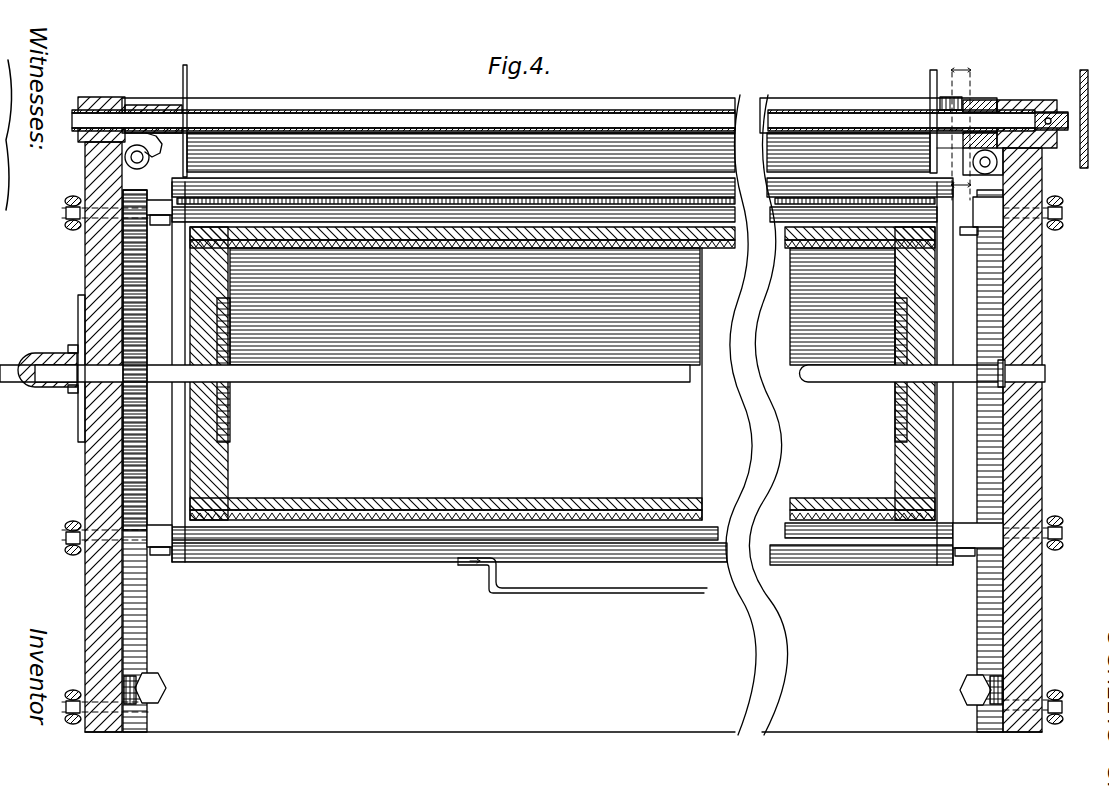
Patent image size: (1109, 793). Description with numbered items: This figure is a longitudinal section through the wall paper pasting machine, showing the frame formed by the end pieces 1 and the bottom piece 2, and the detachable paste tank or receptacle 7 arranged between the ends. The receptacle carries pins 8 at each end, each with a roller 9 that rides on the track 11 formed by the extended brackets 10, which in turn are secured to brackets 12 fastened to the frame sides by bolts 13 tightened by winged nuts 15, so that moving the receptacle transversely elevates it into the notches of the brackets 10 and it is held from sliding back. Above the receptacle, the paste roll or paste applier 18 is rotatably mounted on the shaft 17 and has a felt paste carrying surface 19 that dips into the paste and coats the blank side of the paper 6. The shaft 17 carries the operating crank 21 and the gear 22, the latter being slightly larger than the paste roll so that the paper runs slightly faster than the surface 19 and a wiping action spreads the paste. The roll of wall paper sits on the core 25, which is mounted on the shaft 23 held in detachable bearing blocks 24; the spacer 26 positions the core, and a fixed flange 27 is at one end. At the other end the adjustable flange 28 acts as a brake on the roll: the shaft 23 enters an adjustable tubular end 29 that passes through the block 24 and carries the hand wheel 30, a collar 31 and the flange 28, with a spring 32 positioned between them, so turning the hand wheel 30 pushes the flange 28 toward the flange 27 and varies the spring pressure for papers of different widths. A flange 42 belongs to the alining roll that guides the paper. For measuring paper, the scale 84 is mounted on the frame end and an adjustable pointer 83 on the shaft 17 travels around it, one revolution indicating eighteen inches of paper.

The end piece 1 is at (98, 488).
The bottom piece 2 is at (290, 732).
The paper 6 is at (962, 124).
The paste tank or receptacle 7 is at (382, 545).
The pin 8 is at (440, 562).
The roller 9 is at (163, 226).
The bracket 10 is at (1003, 200).
The track 11 is at (135, 620).
The bracket 12 is at (152, 706).
The thumb screw or bolt 13 is at (76, 528).
The winged nut 15 is at (70, 228).
The shaft 17 is at (440, 378).
The paste roll or paste applier 18 is at (380, 488).
The paste carrying face or surface 19 is at (423, 515).
The operating handle or crank 21 is at (32, 388).
The gear 22 is at (125, 460).
The shaft 23 is at (386, 120).
The detachable bearing or block 24 is at (103, 102).
The core 25 is at (290, 90).
The spacer 26 is at (140, 105).
The flange 27 is at (187, 70).
The adjustable flange 28 is at (932, 92).
The adjustable tubular end 29 is at (985, 112).
The hand wheel 30 is at (1083, 72).
The collar 31 is at (962, 100).
The spring 32 is at (933, 70).
The flange 42 is at (146, 165).
The pointer 83 is at (72, 394).
The scale 84 is at (78, 300).